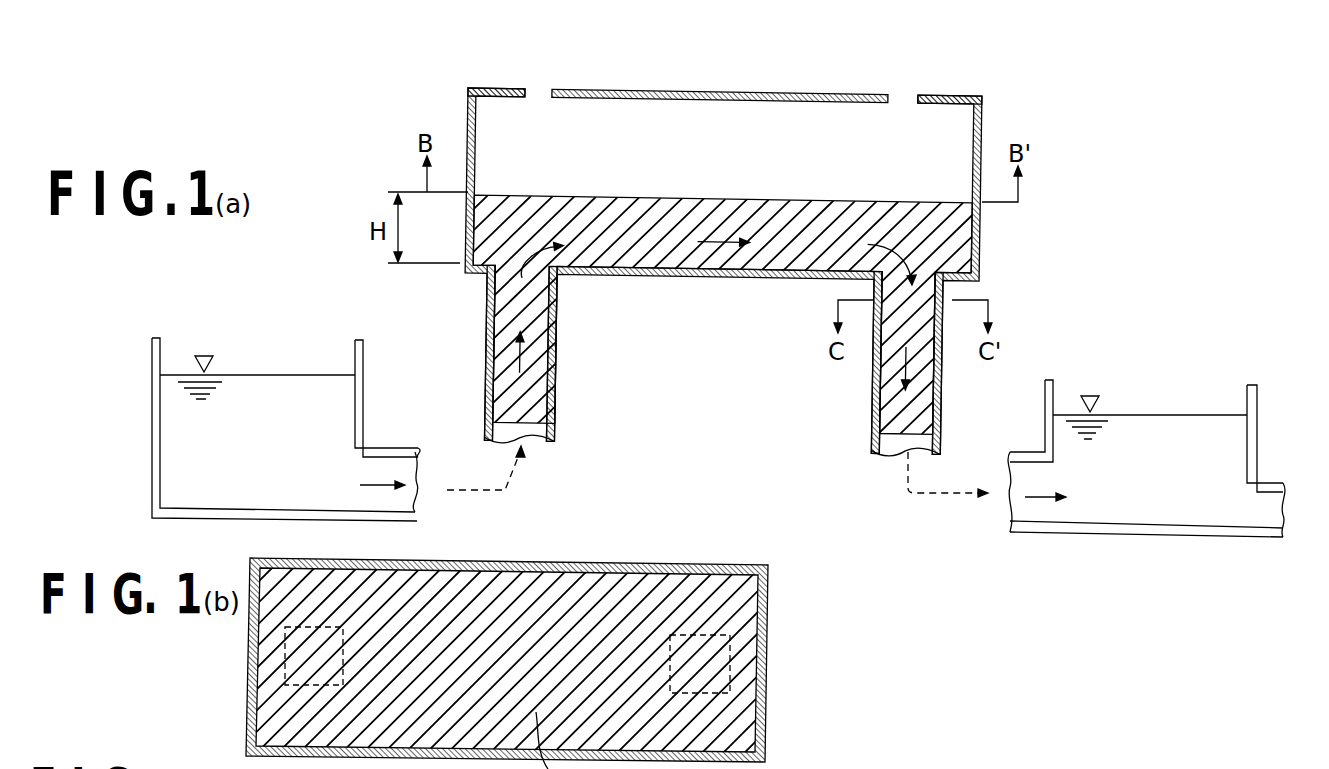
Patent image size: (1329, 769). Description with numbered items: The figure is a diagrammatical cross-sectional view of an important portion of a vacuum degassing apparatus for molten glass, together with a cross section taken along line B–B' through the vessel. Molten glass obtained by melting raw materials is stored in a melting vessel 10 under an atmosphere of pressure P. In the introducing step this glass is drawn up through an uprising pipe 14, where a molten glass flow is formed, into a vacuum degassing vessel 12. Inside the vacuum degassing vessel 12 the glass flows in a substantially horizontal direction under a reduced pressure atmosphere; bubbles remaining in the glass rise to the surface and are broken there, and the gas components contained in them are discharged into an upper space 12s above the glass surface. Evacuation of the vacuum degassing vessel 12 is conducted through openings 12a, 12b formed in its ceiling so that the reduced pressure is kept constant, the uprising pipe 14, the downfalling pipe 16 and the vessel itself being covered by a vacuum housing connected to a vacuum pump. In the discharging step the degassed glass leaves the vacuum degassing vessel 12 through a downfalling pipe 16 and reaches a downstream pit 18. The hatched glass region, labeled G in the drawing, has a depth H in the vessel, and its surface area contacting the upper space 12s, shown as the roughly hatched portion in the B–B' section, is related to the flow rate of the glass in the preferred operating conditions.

In FIG. 1A, the melting vessel 10 is at (363, 380).
In FIG. 1A, the vacuum degassing vessel 12 is at (829, 94).
In FIG. 1B, the vacuum degassing vessel 12 is at (606, 563).
In FIG. 1A, the opening 12a is at (540, 95).
In FIG. 1A, the opening 12b is at (898, 98).
In FIG. 1A, the upper space 12s is at (703, 150).
In FIG. 1A, the uprising pipe 14 is at (558, 366).
In FIG. 1A, the downfalling pipe 16 is at (875, 418).
In FIG. 1A, the downstream pit 18 is at (1058, 378).
In FIG. 1A, the liquid (glass melt) G is at (603, 212).